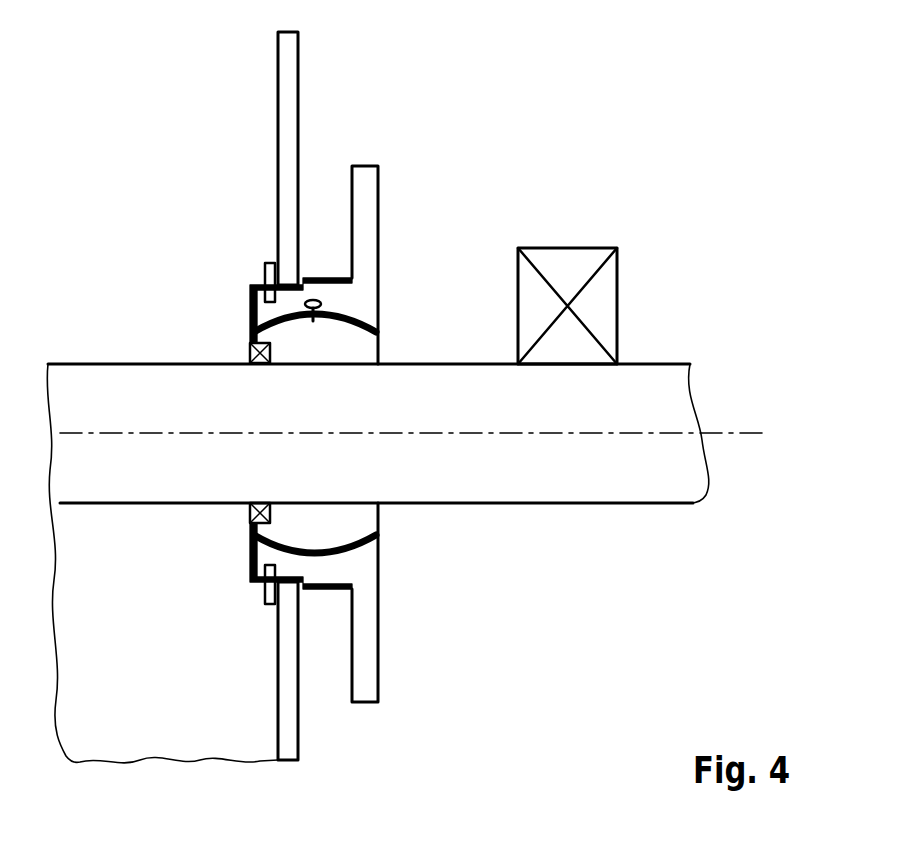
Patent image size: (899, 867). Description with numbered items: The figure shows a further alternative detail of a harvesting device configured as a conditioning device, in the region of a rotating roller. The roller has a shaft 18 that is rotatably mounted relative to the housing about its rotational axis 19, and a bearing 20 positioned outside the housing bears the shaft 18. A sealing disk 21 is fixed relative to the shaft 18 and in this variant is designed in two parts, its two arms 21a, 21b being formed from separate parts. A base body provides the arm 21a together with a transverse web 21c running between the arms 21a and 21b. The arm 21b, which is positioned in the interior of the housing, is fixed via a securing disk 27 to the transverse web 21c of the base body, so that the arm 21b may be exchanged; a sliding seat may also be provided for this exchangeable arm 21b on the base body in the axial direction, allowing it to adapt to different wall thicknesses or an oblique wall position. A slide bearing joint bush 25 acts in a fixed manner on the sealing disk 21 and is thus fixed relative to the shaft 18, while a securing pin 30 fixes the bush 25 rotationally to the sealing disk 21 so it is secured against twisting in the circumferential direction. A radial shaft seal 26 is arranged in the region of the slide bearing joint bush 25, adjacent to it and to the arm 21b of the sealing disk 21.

The shaft 18 is at (692, 472).
The rotational axis 19 is at (752, 433).
The bearing 20 is at (565, 247).
The sealing disk 21 is at (256, 224).
The arm 21a is at (370, 218).
The arm 21b is at (290, 85).
The transverse web 21c is at (322, 290).
The slide bearing joint bush 25 is at (366, 338).
The radial shaft seal 26 is at (250, 358).
The securing disk 27 is at (262, 266).
The securing pin 30 is at (322, 304).